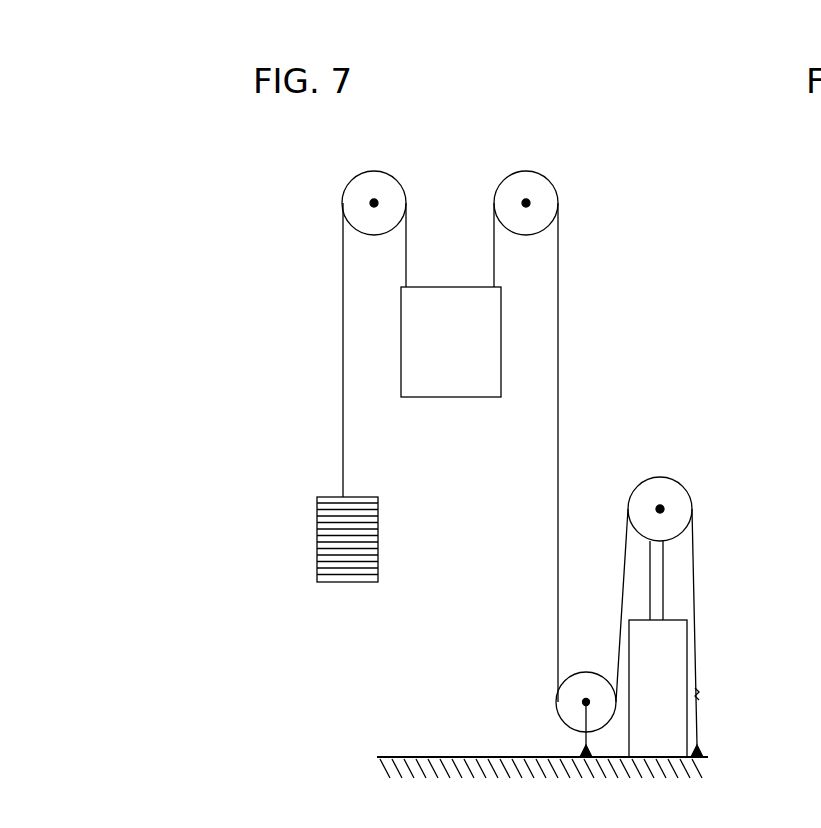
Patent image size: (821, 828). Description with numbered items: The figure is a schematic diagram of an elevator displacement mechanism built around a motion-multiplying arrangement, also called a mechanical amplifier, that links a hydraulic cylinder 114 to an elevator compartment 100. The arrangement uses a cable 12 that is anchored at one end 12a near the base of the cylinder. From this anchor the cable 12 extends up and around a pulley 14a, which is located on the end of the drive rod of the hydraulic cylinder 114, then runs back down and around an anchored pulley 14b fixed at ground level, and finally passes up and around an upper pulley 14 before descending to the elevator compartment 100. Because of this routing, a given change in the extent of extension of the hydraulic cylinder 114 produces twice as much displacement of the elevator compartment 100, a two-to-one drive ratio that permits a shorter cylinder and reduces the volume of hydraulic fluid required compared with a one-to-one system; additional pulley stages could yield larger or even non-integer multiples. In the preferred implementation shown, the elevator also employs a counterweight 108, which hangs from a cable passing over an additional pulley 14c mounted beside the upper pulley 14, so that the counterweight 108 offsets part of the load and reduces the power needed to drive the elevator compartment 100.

The cable 12 is at (556, 565).
The anchored end of cable 12a is at (705, 748).
The upper pulley 14 is at (538, 193).
The pulley on hydraulic cylinder drive rod 14a is at (662, 484).
The anchored pulley 14b is at (568, 706).
The additional pulley 14c is at (368, 220).
The elevator compartment 100 is at (451, 397).
The counterweight 108 is at (318, 540).
The hydraulic cylinder 114 is at (663, 657).